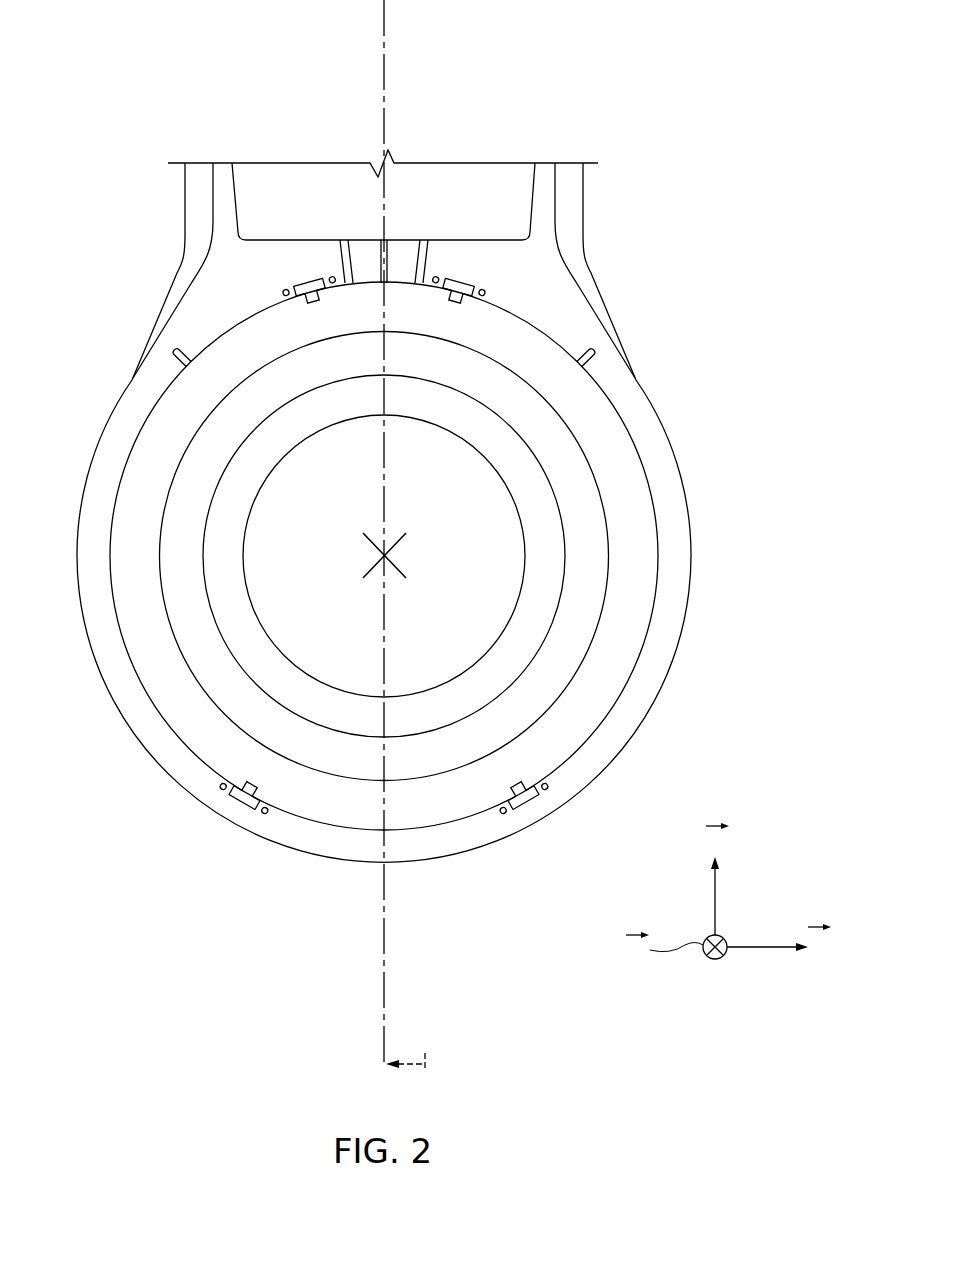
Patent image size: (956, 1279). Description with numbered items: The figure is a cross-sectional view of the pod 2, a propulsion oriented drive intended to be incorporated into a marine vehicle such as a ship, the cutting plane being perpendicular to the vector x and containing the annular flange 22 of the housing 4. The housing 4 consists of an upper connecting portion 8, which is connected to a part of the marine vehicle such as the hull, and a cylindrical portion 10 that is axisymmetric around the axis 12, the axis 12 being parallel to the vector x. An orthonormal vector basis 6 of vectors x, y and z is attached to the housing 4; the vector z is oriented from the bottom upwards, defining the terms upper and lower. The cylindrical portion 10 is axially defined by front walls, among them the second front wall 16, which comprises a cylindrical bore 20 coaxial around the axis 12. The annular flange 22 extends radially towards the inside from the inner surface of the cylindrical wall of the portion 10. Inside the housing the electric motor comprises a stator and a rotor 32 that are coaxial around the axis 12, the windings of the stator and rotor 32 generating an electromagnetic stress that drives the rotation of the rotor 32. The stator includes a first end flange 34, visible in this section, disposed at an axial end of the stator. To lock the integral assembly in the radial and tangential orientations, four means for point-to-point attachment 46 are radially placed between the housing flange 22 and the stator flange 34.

The pod 2 is at (682, 56).
The housing 4 is at (162, 203).
The orthonormal vector basis 6 is at (716, 978).
The upper connecting portion 8 is at (583, 190).
The cylindrical portion 10 is at (692, 563).
The axis 12 is at (372, 552).
The second front wall 16 is at (513, 470).
The cylindrical bore 20 is at (523, 580).
The annular flange 22 is at (600, 745).
The rotor 32 is at (575, 522).
The first end flange 34 is at (627, 620).
The means for point-to-point attachment 46 is at (306, 283).